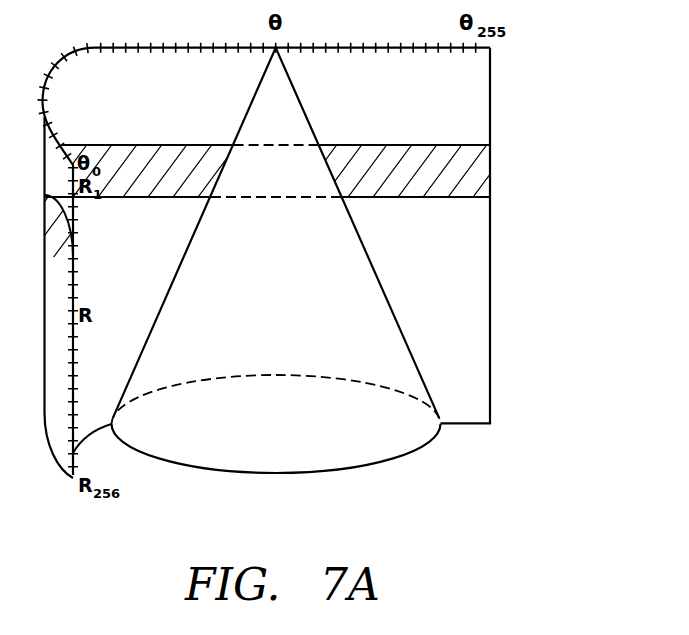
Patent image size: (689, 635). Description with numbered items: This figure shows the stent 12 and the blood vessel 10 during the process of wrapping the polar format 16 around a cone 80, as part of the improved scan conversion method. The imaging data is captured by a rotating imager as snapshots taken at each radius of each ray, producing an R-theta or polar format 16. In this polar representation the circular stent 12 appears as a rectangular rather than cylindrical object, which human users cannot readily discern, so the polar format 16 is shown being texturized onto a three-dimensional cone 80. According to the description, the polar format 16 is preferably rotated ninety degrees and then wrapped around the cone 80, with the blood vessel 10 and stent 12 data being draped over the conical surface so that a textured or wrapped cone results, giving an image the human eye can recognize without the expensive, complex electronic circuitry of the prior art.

The blood vessel 10 is at (467, 100).
The stent 12 is at (468, 172).
The polar format 16 is at (516, 320).
The cone 80 is at (388, 457).